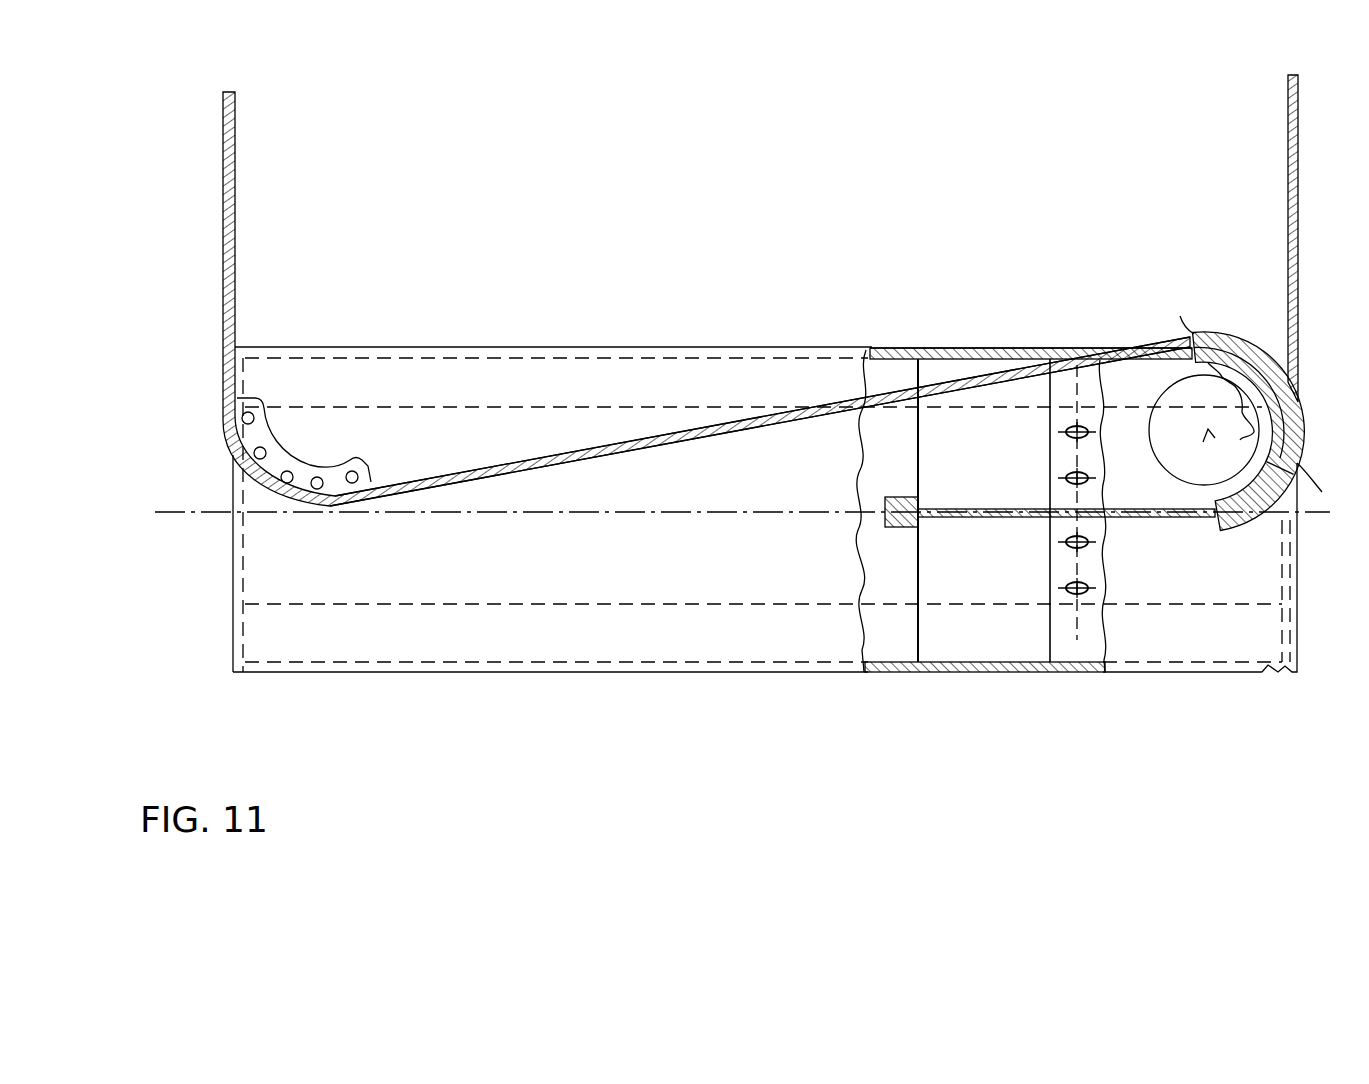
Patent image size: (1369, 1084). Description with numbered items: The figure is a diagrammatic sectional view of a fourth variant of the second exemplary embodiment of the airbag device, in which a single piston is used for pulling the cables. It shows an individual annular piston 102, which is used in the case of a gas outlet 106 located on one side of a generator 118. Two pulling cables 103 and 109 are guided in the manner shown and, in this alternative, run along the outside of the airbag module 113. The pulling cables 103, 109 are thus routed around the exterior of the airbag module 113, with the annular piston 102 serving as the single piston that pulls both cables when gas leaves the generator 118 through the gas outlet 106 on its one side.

The annular piston 102 is at (981, 636).
The pulling cable 103 is at (232, 254).
The gas outlet 106 is at (1082, 592).
The pulling cable 109 is at (1288, 212).
The airbag module 113 is at (502, 432).
The generator 118 is at (971, 305).